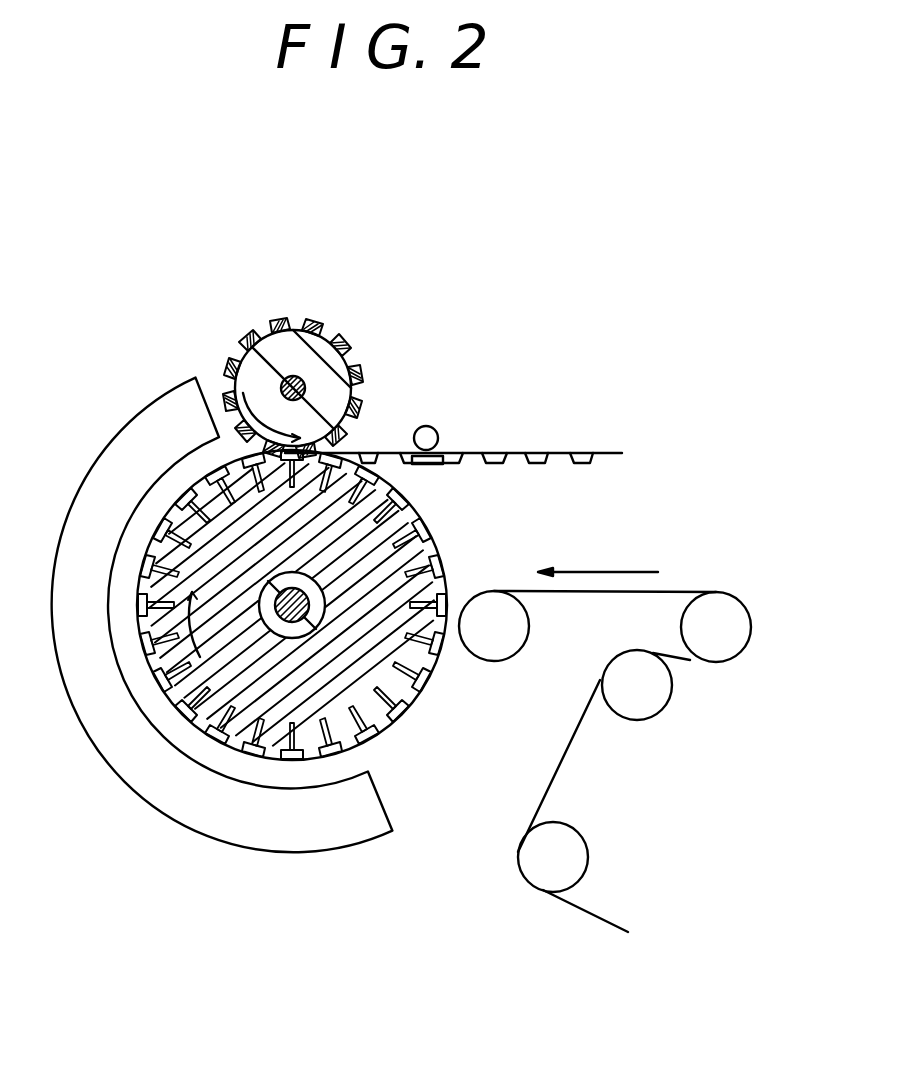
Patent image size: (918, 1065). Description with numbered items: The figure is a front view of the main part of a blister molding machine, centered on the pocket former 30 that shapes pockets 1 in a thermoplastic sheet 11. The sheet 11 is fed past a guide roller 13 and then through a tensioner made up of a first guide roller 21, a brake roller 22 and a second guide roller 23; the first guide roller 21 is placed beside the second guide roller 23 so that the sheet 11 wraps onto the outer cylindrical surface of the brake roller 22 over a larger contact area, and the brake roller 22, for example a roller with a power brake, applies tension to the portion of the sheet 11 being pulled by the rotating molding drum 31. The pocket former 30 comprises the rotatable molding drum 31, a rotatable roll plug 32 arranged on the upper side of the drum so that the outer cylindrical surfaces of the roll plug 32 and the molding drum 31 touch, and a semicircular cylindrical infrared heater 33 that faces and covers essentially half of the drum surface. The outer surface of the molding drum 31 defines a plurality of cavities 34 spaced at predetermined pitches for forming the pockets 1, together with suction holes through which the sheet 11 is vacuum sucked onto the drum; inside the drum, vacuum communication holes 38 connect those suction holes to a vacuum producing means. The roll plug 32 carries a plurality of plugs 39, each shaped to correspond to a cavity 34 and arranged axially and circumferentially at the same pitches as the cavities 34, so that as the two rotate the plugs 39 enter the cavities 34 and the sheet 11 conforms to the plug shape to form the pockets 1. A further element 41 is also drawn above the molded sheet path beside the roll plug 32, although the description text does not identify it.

The pocket 1 is at (493, 460).
The thermoplastic sheet 11 is at (567, 753).
The guide roller 13 is at (578, 862).
The first guide roller 21 is at (655, 700).
The brake roller 22 is at (722, 618).
The second guide roller 23 is at (518, 625).
The pocket former 30 is at (415, 715).
The molding drum 31 is at (432, 552).
The roll plug 32 is at (323, 345).
The infrared heater 33 is at (162, 798).
The cavities 34 is at (422, 550).
The vacuum communication holes 38 is at (437, 560).
The plugs 39 is at (283, 312).
The ball 41 is at (432, 425).